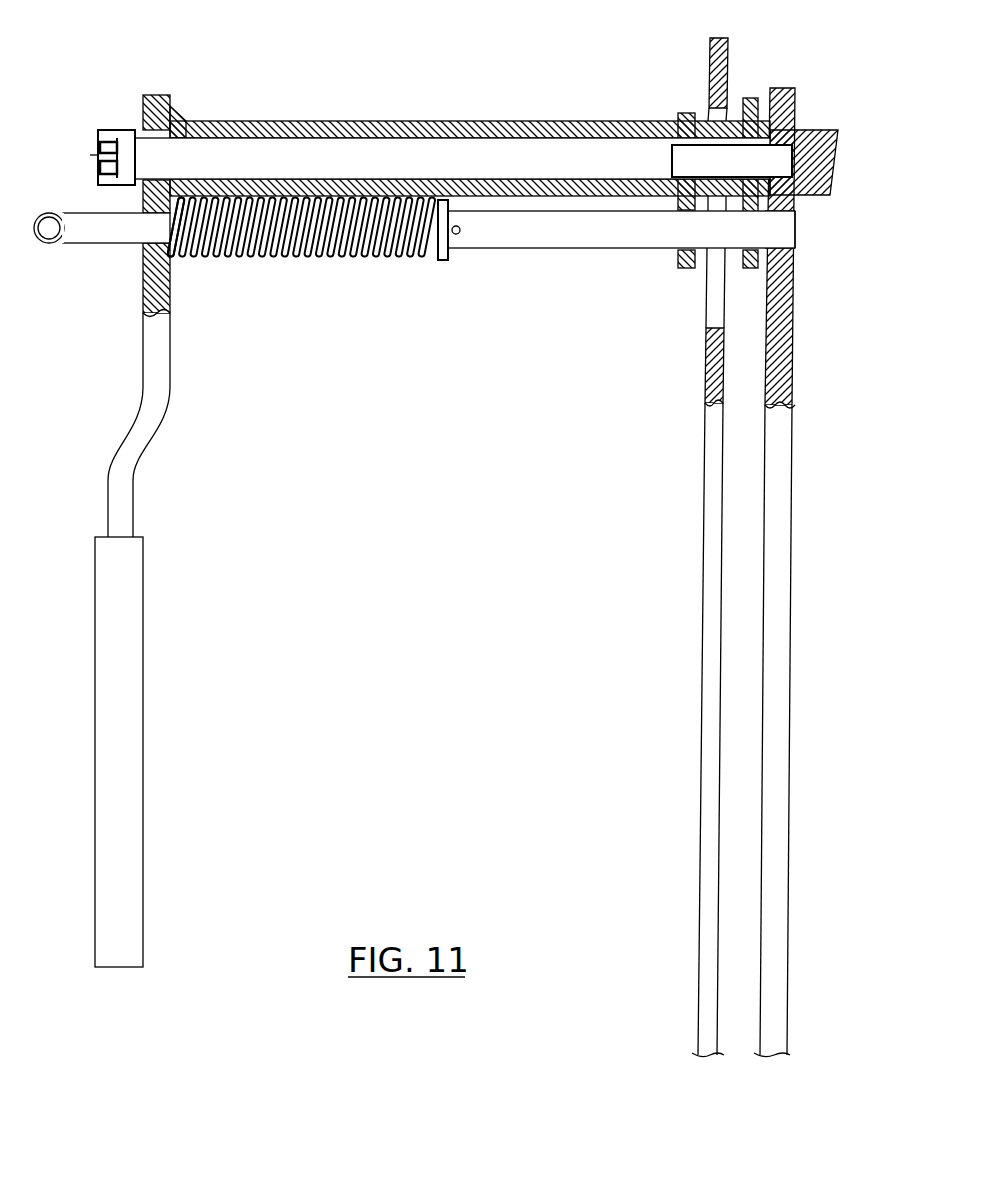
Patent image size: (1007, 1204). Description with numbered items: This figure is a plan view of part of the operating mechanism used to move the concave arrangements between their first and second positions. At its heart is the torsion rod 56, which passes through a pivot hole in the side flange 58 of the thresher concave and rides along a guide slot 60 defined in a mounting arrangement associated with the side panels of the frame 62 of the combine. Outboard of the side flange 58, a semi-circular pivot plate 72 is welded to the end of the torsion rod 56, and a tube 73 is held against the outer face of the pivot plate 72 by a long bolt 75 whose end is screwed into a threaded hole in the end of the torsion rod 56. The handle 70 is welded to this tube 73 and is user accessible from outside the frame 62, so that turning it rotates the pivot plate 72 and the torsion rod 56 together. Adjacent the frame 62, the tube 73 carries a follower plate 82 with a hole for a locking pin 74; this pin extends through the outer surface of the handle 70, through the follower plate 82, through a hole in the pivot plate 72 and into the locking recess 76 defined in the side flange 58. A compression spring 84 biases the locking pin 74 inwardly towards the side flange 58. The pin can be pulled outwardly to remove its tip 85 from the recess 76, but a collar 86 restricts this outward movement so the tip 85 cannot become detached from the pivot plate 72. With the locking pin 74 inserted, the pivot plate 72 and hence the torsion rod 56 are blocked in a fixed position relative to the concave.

The torsion rod 56 is at (822, 130).
The side flange 58 is at (775, 670).
The guide slot 60 is at (713, 300).
The frame 62 is at (702, 757).
The handle 70 is at (118, 850).
The pivot plate 72 is at (748, 97).
The tube 73 is at (278, 121).
The locking pin 74 is at (480, 250).
The long bolt 75 is at (97, 158).
The locking recess 76 is at (793, 330).
The follower plate 82 is at (690, 113).
The compression spring 84 is at (265, 262).
The tip 85 is at (797, 240).
The collar 86 is at (215, 262).